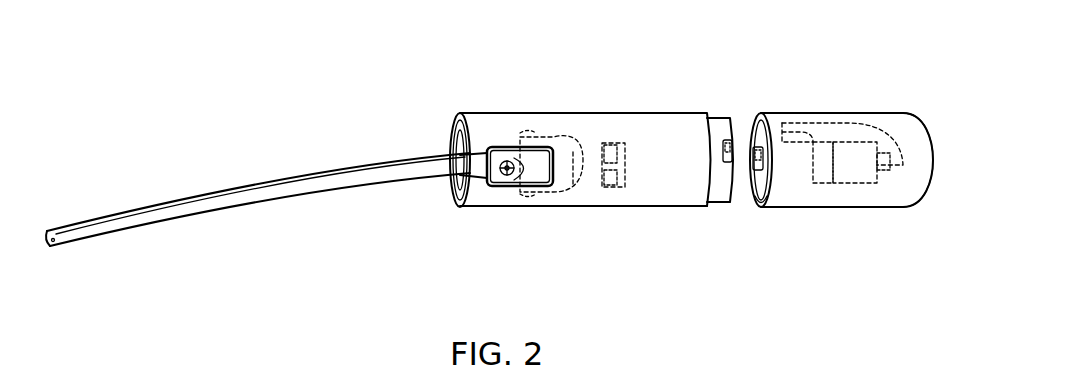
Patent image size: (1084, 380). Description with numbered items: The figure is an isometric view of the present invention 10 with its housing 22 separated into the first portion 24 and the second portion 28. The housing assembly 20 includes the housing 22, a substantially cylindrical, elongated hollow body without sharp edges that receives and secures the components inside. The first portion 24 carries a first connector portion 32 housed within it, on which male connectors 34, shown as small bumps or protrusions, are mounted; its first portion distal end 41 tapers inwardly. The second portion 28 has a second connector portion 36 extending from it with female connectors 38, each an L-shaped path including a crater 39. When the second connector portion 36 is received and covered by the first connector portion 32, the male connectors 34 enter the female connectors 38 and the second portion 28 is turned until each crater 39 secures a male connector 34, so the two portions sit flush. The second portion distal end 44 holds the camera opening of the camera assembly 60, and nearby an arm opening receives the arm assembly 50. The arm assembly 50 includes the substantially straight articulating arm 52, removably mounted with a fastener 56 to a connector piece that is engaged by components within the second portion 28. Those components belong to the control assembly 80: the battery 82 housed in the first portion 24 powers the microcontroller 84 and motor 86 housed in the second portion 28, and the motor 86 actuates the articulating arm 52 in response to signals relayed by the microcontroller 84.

The present invention 10 is at (313, 124).
The housing assembly 20 is at (620, 108).
The housing 22 is at (540, 161).
The first portion 24 is at (850, 168).
The second portion 28 is at (658, 206).
The first connector portion 32 is at (762, 205).
The male connectors 34 is at (769, 117).
The second connector portion 36 is at (717, 203).
The female connectors 38 is at (722, 156).
The crater 39 is at (756, 147).
The first portion distal end 41 is at (933, 160).
The second portion distal end 44 is at (456, 196).
The arm assembly 50 is at (258, 209).
The articulating arm 52 is at (240, 192).
The fastener 56 is at (513, 147).
The camera assembly 60 is at (449, 136).
The control assembly 80 is at (848, 134).
The battery 82 is at (848, 163).
The microcontroller 84 is at (612, 178).
The motor 86 is at (568, 172).